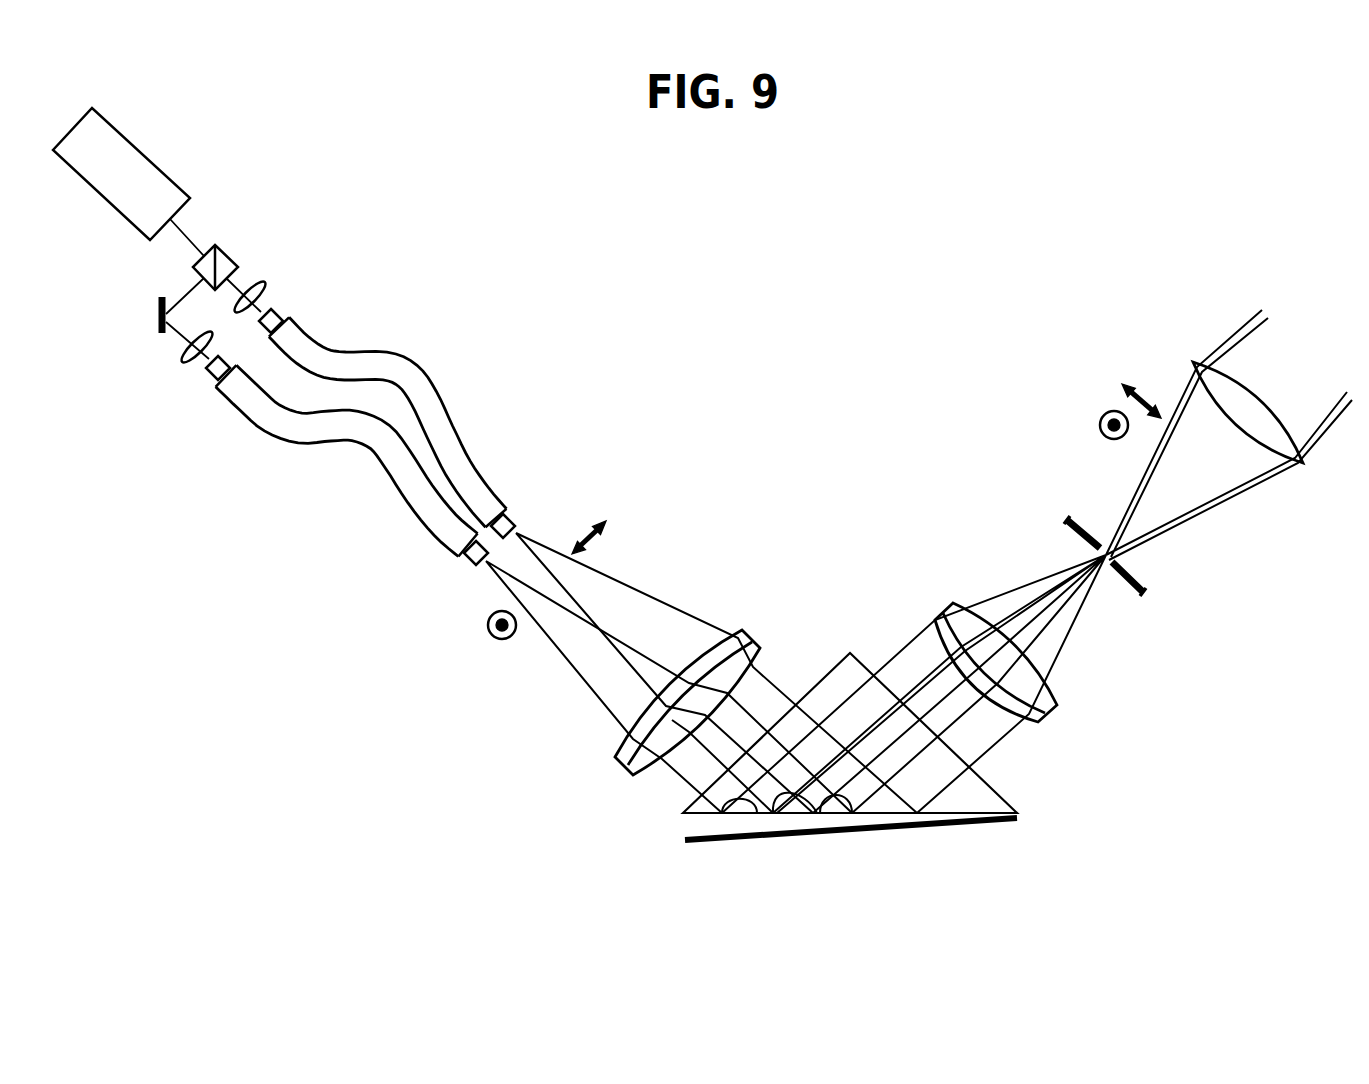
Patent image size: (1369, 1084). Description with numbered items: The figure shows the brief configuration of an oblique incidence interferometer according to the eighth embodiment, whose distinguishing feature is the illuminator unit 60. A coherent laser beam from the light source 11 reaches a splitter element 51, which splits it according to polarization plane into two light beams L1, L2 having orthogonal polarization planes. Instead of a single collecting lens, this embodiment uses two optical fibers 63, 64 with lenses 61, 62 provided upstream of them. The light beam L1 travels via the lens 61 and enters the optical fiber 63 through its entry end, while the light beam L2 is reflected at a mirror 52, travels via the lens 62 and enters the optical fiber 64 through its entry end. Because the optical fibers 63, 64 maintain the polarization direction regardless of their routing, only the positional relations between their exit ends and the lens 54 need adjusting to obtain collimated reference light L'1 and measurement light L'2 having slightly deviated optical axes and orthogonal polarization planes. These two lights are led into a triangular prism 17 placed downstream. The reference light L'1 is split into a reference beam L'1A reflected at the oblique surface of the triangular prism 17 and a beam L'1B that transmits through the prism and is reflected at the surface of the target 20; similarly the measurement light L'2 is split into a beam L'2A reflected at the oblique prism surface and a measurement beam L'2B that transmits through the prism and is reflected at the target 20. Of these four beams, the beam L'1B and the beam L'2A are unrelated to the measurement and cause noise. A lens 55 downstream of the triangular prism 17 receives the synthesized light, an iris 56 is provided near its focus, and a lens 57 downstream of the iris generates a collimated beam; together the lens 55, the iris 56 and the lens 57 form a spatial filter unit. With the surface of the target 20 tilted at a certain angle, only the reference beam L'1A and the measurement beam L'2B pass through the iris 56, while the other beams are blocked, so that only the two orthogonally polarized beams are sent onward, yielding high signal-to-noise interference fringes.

The light source 11 is at (143, 152).
The splitter element 51 is at (224, 250).
The mirror 52 is at (156, 312).
The light beam L1 is at (256, 284).
The light beam L2 is at (185, 340).
The lens 61 is at (273, 308).
The lens 62 is at (206, 368).
The optical fiber 63 is at (464, 455).
The optical fiber 64 is at (397, 481).
The illuminator unit 60 is at (405, 260).
The lens 54 is at (619, 760).
The triangular prism 17 is at (848, 651).
The target 20 is at (962, 826).
The lens 55 is at (1052, 712).
The iris 56 is at (1147, 592).
The lens 57 is at (1306, 466).
The reference light L'1 is at (716, 673).
The measurement light L'2 is at (669, 698).
The reference beam L'1A is at (783, 849).
The beam L'1B is at (850, 850).
The beam L'2A is at (726, 871).
The measurement beam L'2B is at (813, 878).